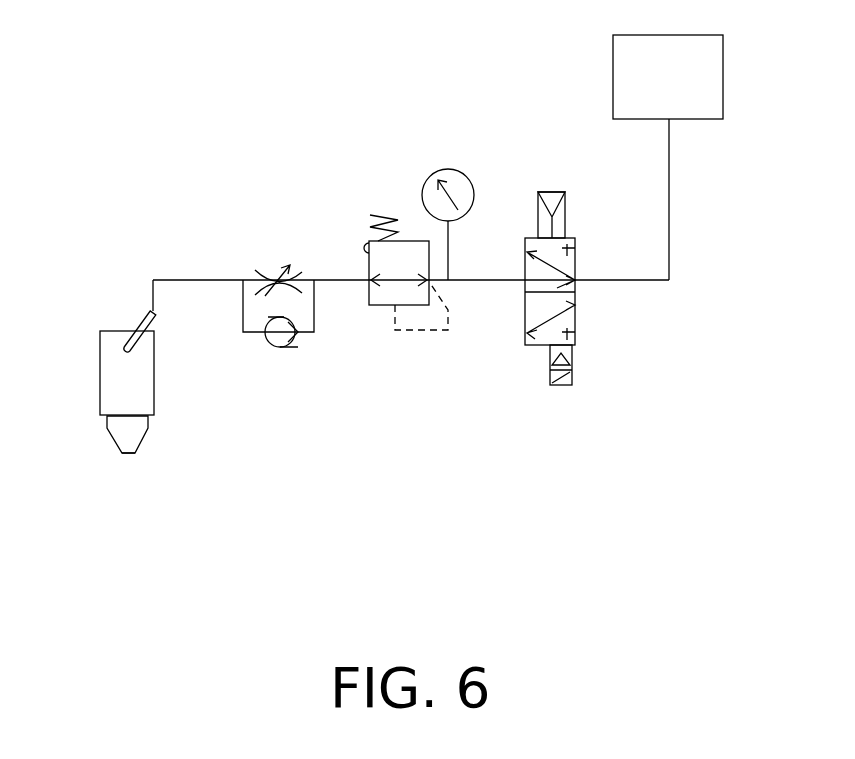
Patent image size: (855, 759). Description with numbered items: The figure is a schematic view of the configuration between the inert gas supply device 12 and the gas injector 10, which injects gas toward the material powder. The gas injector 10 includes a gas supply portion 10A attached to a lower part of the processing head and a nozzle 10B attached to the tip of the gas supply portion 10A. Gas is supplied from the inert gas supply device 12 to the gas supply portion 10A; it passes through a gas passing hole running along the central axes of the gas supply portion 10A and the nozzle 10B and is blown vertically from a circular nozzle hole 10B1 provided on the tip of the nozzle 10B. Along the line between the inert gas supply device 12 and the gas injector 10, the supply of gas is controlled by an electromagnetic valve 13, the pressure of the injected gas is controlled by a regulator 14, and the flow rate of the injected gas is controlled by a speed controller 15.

The gas injector 10 is at (86, 329).
The gas supply portion 10A is at (120, 380).
The nozzle 10B is at (118, 437).
The circular nozzle hole 10B1 is at (130, 452).
The inert gas supply device 12 is at (713, 65).
The electromagnetic valve 13 is at (518, 370).
The regulator 14 is at (397, 178).
The speed controller 15 is at (264, 372).